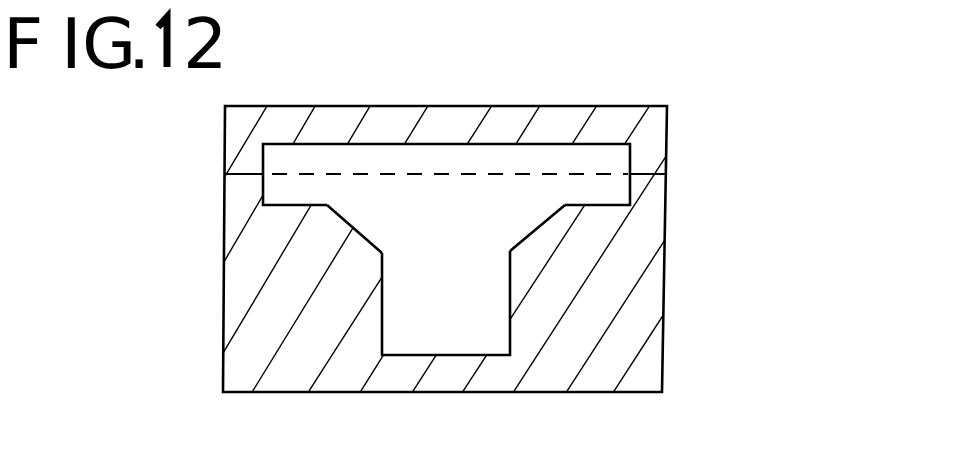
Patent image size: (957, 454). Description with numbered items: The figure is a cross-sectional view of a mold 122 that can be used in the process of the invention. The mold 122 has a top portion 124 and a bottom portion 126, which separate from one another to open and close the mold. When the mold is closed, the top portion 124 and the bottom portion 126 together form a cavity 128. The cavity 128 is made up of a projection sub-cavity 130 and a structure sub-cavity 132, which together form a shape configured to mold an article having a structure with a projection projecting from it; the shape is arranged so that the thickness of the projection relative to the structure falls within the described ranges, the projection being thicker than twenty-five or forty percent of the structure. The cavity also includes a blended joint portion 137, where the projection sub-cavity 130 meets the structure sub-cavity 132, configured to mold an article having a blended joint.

The mold 122 is at (632, 100).
The top portion 124 is at (445, 120).
The bottom portion 126 is at (392, 372).
The cavity 128 is at (460, 222).
The projection sub-cavity 130 is at (478, 295).
The structure sub-cavity 132 is at (287, 190).
The blended joint portion 137 is at (358, 235).